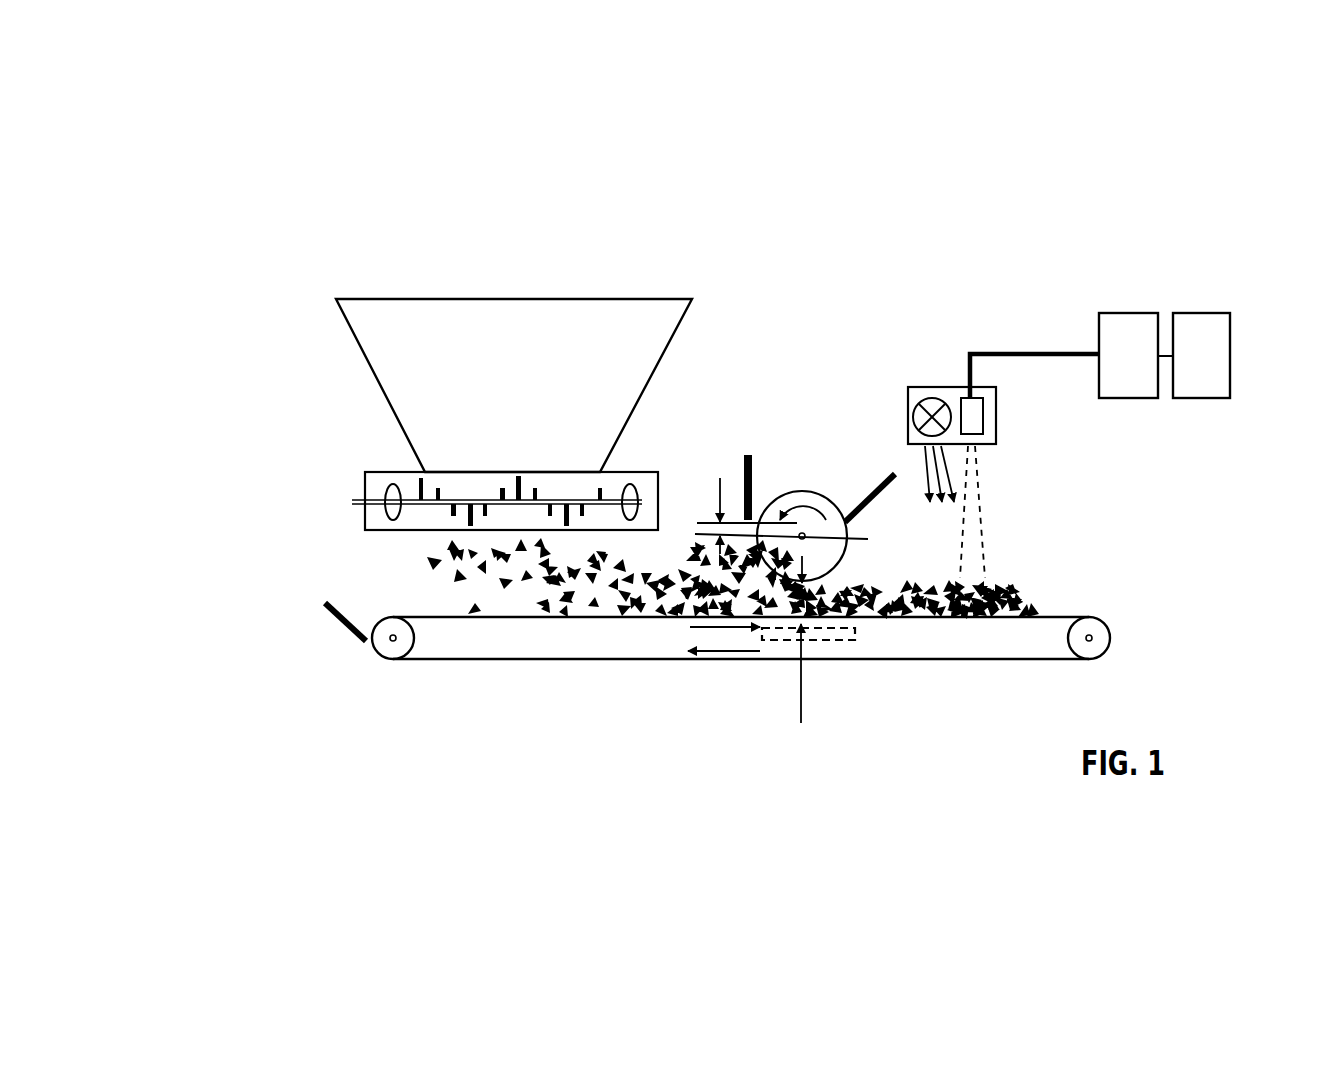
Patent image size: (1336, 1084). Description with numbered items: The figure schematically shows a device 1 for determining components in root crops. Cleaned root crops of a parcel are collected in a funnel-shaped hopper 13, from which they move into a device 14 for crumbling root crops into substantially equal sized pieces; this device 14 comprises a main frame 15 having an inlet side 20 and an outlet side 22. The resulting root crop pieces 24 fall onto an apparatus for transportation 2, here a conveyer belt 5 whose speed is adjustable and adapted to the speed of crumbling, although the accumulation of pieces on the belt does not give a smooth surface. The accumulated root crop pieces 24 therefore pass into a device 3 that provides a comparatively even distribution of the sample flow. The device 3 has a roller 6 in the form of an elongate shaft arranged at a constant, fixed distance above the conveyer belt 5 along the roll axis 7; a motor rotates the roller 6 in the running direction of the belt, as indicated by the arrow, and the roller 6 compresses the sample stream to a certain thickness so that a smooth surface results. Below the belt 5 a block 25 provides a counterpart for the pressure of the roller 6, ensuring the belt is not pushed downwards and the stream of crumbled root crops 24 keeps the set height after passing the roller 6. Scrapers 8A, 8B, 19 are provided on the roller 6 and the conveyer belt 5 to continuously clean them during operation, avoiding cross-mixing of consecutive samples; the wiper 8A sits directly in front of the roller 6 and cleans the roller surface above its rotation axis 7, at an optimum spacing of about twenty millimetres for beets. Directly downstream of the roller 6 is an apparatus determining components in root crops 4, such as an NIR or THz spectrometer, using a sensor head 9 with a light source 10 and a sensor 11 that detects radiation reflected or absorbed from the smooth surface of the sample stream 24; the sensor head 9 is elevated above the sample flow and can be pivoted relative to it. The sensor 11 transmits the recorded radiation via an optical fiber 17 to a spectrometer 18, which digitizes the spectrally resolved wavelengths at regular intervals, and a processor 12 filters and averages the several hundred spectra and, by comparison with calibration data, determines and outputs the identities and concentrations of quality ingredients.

The device for determining components in root crops 1 is at (736, 148).
The apparatus for transportation 2 is at (462, 677).
The device for even distribution of the sample flow 3 is at (806, 378).
The apparatus determining components in root crops 4 is at (1086, 198).
The conveyer belt 5 is at (598, 661).
The roller 6 is at (800, 491).
The roll axis 7 is at (788, 522).
The wiper 8A is at (745, 462).
The scraper 8B is at (893, 476).
The sensor head 9 is at (953, 387).
The light source 10 is at (932, 388).
The sensor 11 is at (984, 418).
The processor 12 is at (1198, 313).
The funnel-shaped hopper 13 is at (378, 384).
The device for crumbling root crops 14 is at (322, 530).
The main frame 15 is at (362, 486).
The optical fiber 17 is at (1041, 352).
The spectrometer 18 is at (1128, 313).
The scraper 19 is at (348, 626).
The inlet side 20 is at (463, 468).
The outlet side 22 is at (523, 538).
The root crop pieces 24 is at (649, 596).
The block 25 is at (848, 645).